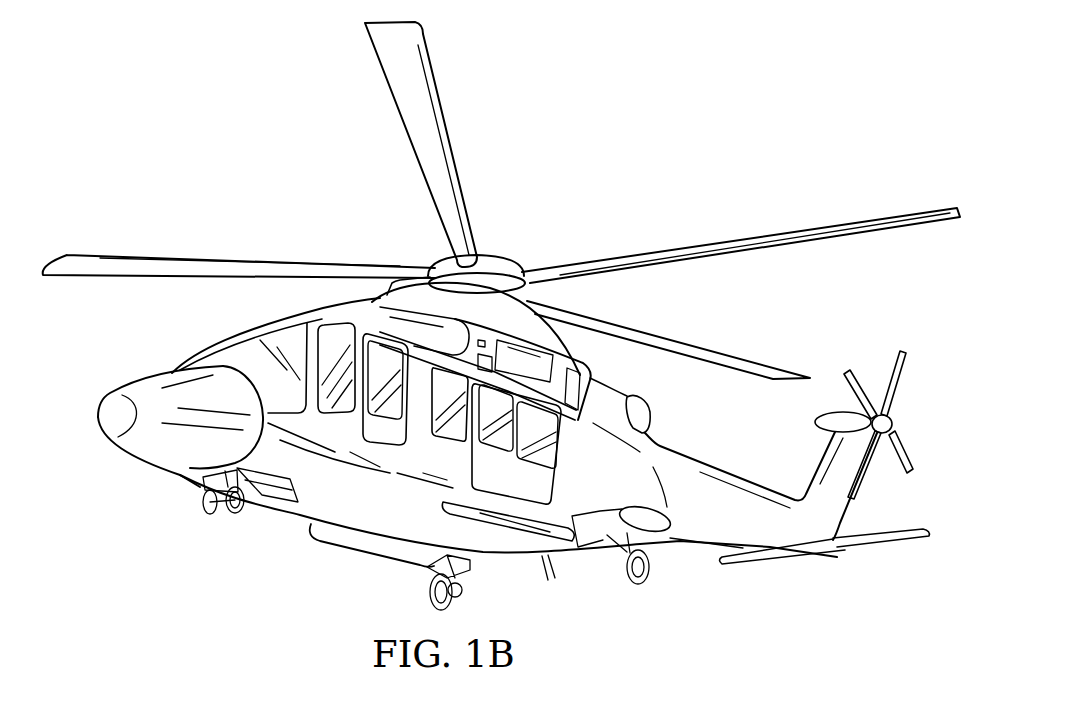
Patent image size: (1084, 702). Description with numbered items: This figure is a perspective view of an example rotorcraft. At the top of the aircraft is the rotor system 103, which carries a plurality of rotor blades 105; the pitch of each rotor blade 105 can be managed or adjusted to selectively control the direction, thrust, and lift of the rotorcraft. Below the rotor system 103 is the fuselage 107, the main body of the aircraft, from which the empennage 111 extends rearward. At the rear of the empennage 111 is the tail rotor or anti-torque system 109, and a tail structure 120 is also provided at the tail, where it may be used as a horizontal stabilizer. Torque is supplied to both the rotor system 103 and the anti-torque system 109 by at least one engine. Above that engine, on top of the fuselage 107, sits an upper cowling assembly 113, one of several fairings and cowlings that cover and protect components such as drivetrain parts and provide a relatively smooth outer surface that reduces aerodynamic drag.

The rotor system 103 is at (380, 201).
The rotor blades 105 is at (726, 254).
The fuselage 107 is at (307, 509).
The tail rotor or anti-torque system 109 is at (879, 342).
The empennage 111 is at (700, 538).
The upper cowling assembly 113 is at (548, 336).
The tail structure 120 is at (887, 549).